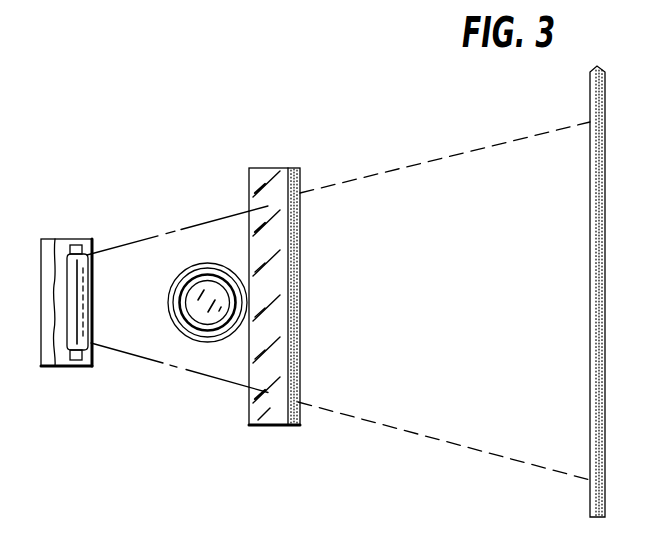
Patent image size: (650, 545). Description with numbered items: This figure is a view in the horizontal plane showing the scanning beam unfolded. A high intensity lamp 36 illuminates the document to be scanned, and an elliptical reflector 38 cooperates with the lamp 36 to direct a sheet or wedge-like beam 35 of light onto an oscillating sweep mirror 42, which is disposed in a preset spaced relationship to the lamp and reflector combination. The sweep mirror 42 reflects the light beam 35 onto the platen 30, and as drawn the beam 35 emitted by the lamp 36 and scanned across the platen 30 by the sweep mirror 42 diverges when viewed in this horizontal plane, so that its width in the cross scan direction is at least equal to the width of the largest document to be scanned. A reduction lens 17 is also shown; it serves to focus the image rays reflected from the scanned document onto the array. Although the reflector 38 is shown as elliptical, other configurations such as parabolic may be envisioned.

The reduction lens 17 is at (186, 290).
The platen 30 is at (597, 100).
The beam of light 35 is at (182, 228).
The lamp 36 is at (68, 367).
The elliptical reflector 38 is at (56, 240).
The sweep mirror 42 is at (291, 248).